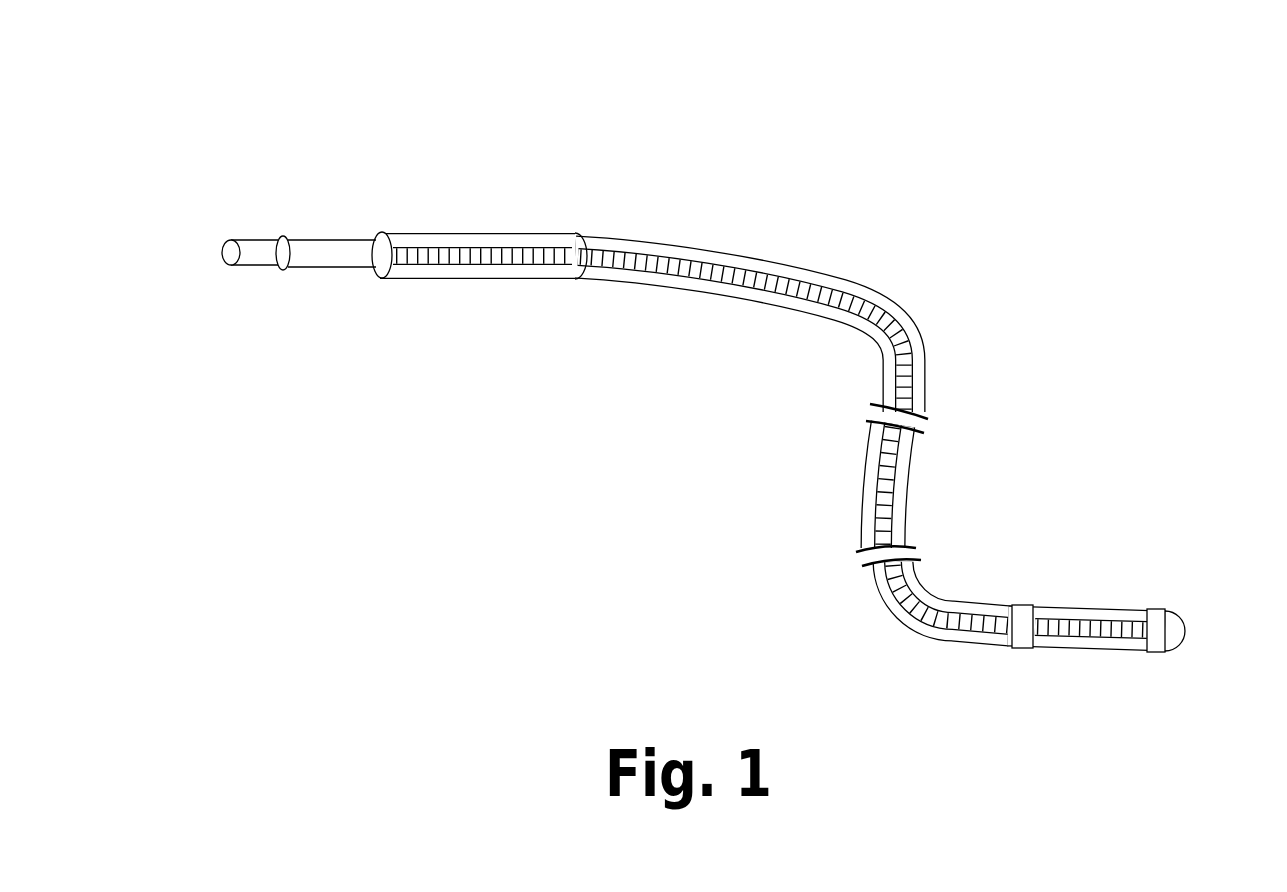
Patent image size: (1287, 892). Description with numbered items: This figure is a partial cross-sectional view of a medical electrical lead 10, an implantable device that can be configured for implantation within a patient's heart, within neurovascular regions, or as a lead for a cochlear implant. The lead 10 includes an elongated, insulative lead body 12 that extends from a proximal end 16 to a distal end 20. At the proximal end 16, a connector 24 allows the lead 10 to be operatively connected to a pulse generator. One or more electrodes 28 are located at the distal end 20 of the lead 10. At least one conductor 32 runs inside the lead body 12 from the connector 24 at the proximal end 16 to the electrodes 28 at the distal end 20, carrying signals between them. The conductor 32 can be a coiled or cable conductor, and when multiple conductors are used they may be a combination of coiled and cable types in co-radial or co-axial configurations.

The medical electrical lead 10 is at (266, 115).
The lead body 12 is at (741, 255).
The proximal end 16 is at (487, 233).
The distal end 20 is at (1120, 610).
The connector 24 is at (349, 240).
The electrodes 28 is at (1162, 612).
The conductor 32 is at (815, 285).